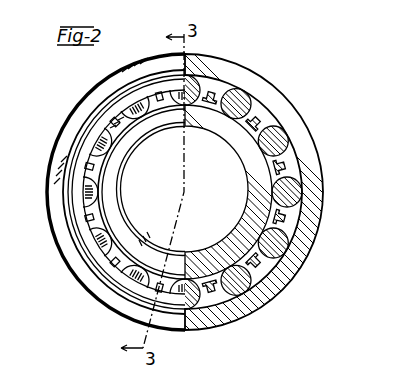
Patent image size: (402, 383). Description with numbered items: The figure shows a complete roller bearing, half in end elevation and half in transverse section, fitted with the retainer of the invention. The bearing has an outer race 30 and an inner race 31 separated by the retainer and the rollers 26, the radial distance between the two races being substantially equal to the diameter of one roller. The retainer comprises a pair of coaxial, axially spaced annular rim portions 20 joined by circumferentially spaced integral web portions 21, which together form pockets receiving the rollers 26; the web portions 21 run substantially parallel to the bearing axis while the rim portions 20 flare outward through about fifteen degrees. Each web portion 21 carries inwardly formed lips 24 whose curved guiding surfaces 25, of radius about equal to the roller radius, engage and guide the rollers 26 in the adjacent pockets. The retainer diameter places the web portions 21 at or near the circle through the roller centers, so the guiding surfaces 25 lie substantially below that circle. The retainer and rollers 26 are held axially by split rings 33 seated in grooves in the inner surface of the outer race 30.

The rim portion 20 is at (88, 163).
The web portion 21 is at (282, 166).
The lip 24 is at (95, 224).
The guiding surface 25 is at (90, 257).
The roller 26 is at (128, 98).
The outer race 30 is at (258, 84).
The inner race 31 is at (250, 223).
The split ring 33 is at (92, 126).